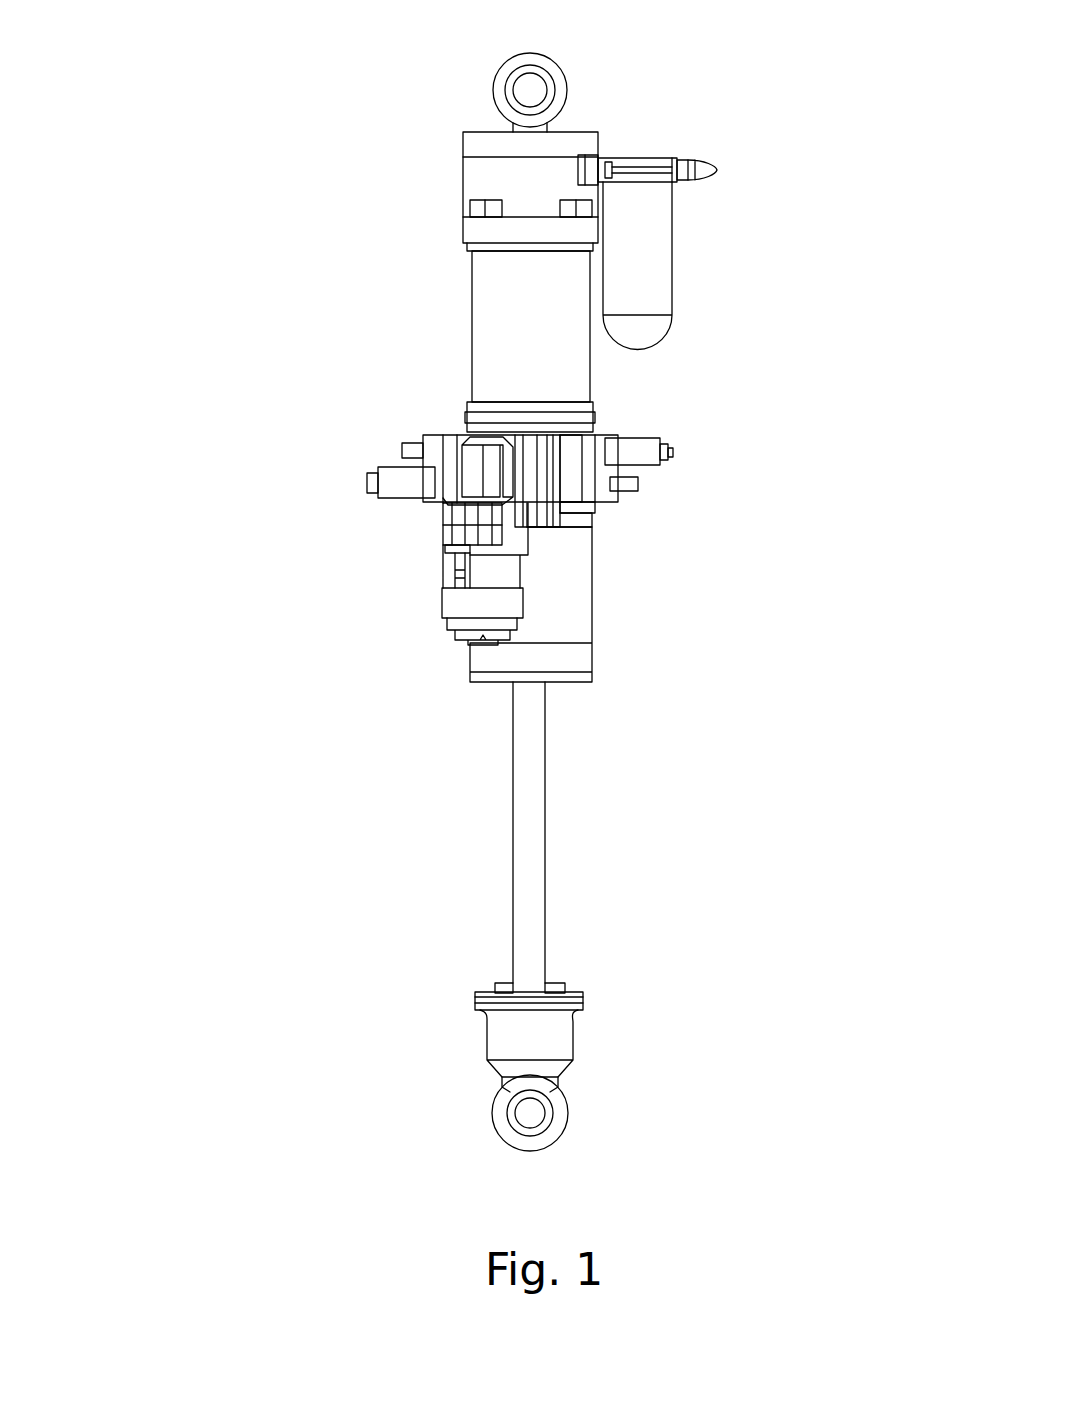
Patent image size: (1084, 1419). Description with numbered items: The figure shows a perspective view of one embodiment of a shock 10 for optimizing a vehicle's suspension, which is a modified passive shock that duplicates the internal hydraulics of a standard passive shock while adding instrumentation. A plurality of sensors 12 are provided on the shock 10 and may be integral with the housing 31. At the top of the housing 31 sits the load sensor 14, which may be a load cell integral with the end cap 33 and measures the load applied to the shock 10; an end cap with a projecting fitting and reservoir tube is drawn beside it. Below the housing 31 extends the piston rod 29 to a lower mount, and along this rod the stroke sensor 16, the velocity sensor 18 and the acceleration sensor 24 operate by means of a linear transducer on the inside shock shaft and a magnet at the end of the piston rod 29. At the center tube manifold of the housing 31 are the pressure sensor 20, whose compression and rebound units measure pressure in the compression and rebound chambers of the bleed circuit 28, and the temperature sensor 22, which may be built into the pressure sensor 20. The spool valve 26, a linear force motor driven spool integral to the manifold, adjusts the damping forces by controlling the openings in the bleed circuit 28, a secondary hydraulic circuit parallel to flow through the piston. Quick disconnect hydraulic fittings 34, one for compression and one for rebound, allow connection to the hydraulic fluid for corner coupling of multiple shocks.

The shock 10 is at (598, 55).
The sensors 12 is at (205, 560).
The load sensor 14 is at (463, 143).
The stroke sensor 16 is at (611, 917).
The velocity sensor 18 is at (611, 917).
The pressure sensor 20 is at (470, 441).
The temperature sensor 22 is at (470, 441).
The acceleration sensor 24 is at (592, 683).
The spool valve 26 is at (442, 612).
The bleed circuit 28 is at (322, 530).
The piston rod 29 is at (513, 890).
The housing 31 is at (595, 645).
The end cap 33 is at (660, 128).
The quick disconnect hydraulic fitting 34 is at (400, 443).